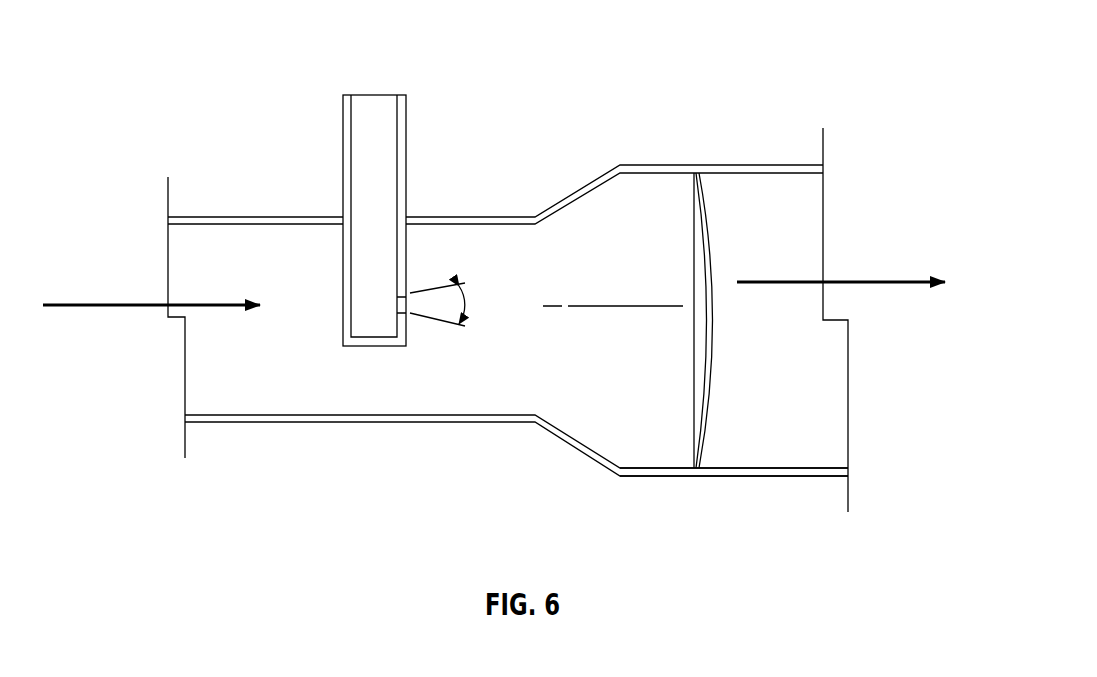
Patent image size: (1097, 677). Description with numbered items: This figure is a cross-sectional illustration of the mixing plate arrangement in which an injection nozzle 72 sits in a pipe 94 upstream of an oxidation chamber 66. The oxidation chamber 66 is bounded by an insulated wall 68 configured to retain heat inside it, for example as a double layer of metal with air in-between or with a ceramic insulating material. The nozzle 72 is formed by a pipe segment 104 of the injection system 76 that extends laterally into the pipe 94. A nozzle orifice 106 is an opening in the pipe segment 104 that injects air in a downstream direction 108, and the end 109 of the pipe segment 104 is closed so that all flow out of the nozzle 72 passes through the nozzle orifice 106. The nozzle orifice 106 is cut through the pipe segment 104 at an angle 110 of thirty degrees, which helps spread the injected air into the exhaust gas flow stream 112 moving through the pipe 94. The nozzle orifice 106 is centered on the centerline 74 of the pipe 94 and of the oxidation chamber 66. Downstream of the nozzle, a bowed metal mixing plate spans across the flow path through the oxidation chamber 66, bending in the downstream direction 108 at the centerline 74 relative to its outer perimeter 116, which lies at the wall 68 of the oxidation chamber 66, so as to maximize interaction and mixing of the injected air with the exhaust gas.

The oxidation chamber 66 is at (799, 415).
The insulated wall 68 is at (745, 476).
The injection nozzle 72 is at (422, 327).
The centerline 74 is at (645, 306).
The injection system 76 is at (436, 272).
The pipe 94 is at (285, 422).
The pipe segment 104 is at (343, 240).
The nozzle orifice 106 is at (398, 296).
The downstream direction 108 is at (373, 338).
The end 109 is at (877, 280).
The angle 110 is at (468, 307).
The exhaust gas flow stream 112 is at (102, 302).
The outer perimeter 116 is at (697, 173).